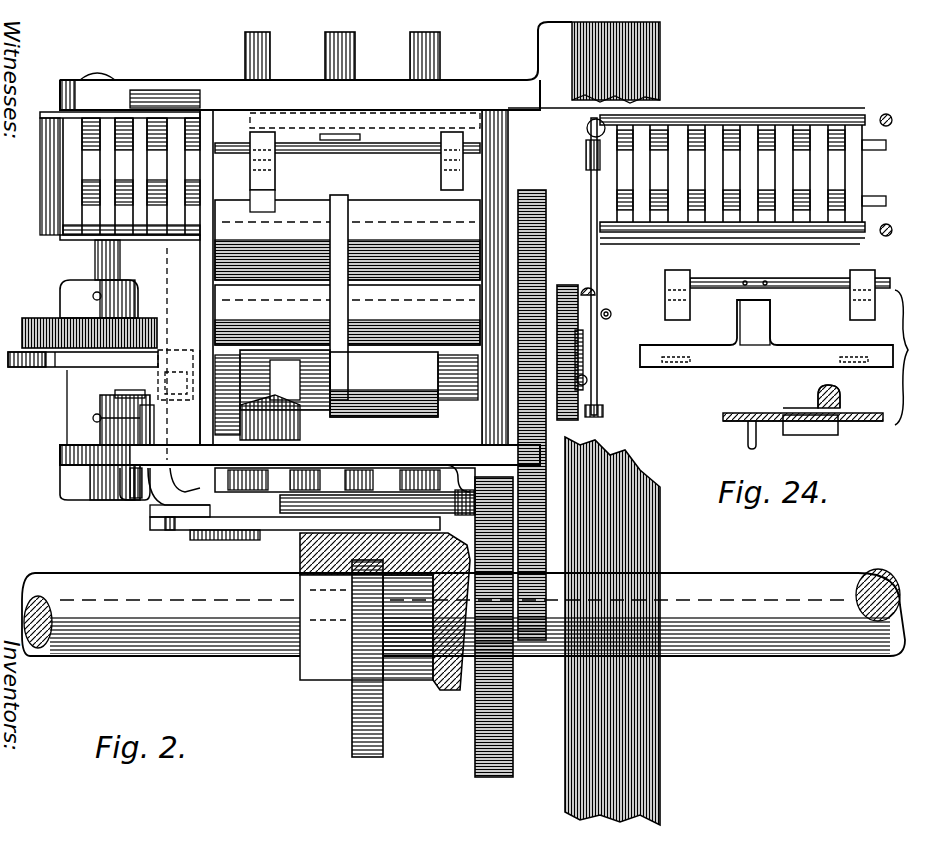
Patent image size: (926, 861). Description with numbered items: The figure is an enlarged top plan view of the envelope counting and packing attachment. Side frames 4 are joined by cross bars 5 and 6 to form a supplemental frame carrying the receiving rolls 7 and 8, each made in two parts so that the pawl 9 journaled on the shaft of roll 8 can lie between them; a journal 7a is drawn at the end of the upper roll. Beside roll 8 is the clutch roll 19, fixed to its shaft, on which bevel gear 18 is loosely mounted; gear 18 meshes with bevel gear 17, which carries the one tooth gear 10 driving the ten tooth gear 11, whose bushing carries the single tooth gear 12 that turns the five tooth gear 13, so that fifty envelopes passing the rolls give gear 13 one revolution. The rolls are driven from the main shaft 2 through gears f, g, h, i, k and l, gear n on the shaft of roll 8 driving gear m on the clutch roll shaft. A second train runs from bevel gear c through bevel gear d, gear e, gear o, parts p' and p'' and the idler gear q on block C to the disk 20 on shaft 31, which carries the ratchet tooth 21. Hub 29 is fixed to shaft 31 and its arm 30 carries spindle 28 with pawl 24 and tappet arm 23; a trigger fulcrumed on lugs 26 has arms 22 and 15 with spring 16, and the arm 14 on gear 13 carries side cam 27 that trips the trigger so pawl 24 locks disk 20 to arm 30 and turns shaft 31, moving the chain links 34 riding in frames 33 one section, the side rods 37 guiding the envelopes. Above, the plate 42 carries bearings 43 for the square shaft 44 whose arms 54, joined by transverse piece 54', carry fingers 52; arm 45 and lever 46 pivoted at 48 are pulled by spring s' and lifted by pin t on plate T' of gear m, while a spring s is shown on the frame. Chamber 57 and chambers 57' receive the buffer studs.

In FIG. 2, the driving shaft 2 is at (463, 612).
In FIG. 2, the side frames 4 is at (154, 88).
In FIG. 2, the cross bar 5 is at (213, 164).
In FIG. 2, the cross bar 6 is at (508, 178).
In FIG. 2, the receiving roll 7 is at (347, 240).
In FIG. 2, the roller journal 7a is at (299, 203).
In FIG. 2, the receiving roll 8 is at (347, 315).
In FIG. 2, the pawl 9 is at (339, 297).
In FIG. 2, the one tooth gear 10 is at (262, 482).
In FIG. 2, the ten tooth gear 11 is at (386, 488).
In FIG. 2, the single tooth gear 12 is at (377, 512).
In FIG. 2, the five tooth gear 13 is at (186, 531).
In FIG. 2, the arm 14 is at (182, 507).
In FIG. 2, the trigger arm 15 is at (152, 502).
In FIG. 2, the spring 16 is at (181, 484).
In FIG. 2, the bevel gear 17 is at (280, 428).
In FIG. 2, the bevel gear 18 is at (285, 380).
In FIG. 2, the clutch roll 19 is at (404, 384).
In FIG. 2, the disk 20 is at (78, 356).
In FIG. 2, the ratchet tooth 21 is at (55, 368).
In FIG. 2, the trigger arm 22 is at (154, 433).
In FIG. 2, the tappet arm 23 is at (106, 411).
In FIG. 2, the pawl 24 is at (175, 375).
In FIG. 2, the lugs 26 is at (128, 502).
In FIG. 2, the side cam 27 is at (170, 531).
In FIG. 2, the spindle 28 is at (176, 383).
In FIG. 2, the hub 29 is at (133, 397).
In FIG. 2, the arm 30 is at (132, 387).
In FIG. 2, the shaft 31 is at (84, 260).
In FIG. 2, the frames 33 is at (62, 112).
In FIG. 2, the links 34 is at (876, 173).
In FIG. 2, the side rods 37 is at (872, 114).
In FIG. 2, the plate 42 is at (332, 129).
In FIG. 24, the plate 42 is at (733, 413).
In FIG. 2, the journal bearings 43 is at (275, 174).
In FIG. 24, the journal bearings 43 is at (664, 306).
In FIG. 2, the shaft 44 is at (382, 156).
In FIG. 24, the shaft 44 is at (738, 278).
In FIG. 2, the arm 45 is at (586, 170).
In FIG. 2, the lever 46 is at (600, 257).
In FIG. 2, the pivot 48 is at (597, 294).
In FIG. 24, the fingers 52 is at (750, 447).
In FIG. 24, the arms 54 is at (766, 379).
In FIG. 24, the transverse piece 54' is at (755, 322).
In FIG. 2, the chamber 57 is at (361, 56).
In FIG. 2, the chambers 57' is at (362, 56).
In FIG. 2, the bevel gear c is at (460, 698).
In FIG. 2, the bevel gear d is at (460, 525).
In FIG. 2, the gear e is at (462, 502).
In FIG. 2, the gear f is at (482, 562).
In FIG. 2, the gear g is at (566, 596).
In FIG. 2, the gear h is at (550, 486).
In FIG. 2, the gear i is at (556, 448).
In FIG. 2, the gear k is at (552, 290).
In FIG. 2, the gear l is at (546, 196).
In FIG. 2, the gear m is at (583, 384).
In FIG. 2, the gear n is at (572, 292).
In FIG. 2, the gear o is at (292, 484).
In FIG. 2, the idler gear q is at (235, 307).
In FIG. 2, the roller part p' is at (288, 301).
In FIG. 2, the roller part p'' is at (240, 355).
In FIG. 2, the spring s is at (456, 466).
In FIG. 2, the spring s' is at (615, 307).
In FIG. 2, the pin t is at (603, 410).
In FIG. 2, the arm T' is at (604, 360).
In FIG. 2, the block C is at (166, 276).